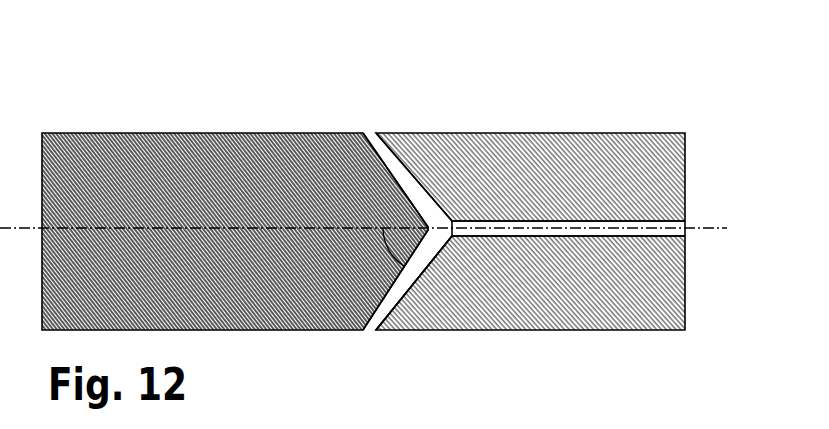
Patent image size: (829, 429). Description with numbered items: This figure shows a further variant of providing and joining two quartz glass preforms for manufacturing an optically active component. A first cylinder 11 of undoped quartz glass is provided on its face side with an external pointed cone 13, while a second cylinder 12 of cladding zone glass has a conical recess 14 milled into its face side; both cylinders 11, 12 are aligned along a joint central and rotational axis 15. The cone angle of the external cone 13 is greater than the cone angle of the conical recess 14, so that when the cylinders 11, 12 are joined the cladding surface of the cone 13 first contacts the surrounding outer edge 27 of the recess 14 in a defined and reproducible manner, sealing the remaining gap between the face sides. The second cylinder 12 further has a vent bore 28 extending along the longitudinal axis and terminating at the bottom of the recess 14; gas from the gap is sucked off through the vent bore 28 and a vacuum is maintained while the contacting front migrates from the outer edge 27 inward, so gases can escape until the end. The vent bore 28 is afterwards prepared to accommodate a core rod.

The first cylinder 11 is at (128, 197).
The second cylinder 12 is at (625, 196).
The pointed cone 13 is at (363, 187).
The conical recess 14 is at (448, 315).
The central and rotational axis 15 is at (707, 232).
The outer edge 27 is at (376, 132).
The vent bore 28 is at (597, 228).